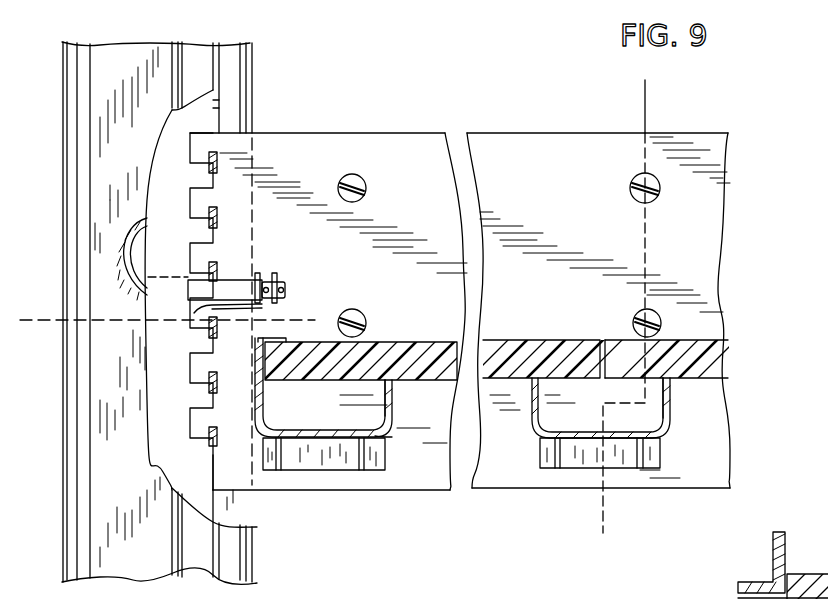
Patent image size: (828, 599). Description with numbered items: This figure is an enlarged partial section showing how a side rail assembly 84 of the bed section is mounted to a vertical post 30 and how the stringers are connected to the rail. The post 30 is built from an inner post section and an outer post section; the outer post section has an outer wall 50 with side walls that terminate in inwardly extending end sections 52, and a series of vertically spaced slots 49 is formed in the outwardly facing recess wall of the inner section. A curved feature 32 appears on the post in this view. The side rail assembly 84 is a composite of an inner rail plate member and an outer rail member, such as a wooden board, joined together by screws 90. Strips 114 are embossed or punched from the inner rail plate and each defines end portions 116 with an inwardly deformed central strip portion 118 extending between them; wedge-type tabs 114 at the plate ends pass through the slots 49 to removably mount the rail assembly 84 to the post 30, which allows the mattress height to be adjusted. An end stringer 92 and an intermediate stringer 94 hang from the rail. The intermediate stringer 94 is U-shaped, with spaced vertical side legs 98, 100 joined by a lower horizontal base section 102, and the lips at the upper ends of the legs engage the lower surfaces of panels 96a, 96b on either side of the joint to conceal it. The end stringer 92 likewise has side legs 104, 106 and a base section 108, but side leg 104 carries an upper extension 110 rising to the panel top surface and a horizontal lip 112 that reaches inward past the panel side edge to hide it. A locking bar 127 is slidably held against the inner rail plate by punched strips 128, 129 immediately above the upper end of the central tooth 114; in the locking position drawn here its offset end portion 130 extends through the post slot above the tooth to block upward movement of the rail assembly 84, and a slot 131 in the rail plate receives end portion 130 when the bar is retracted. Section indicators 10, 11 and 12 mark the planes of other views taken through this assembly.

The section line 10- 10 is at (30, 320).
The section line 11- 11 is at (603, 88).
The section line 12- 12 is at (162, 275).
The post 30 is at (61, 493).
The bulge 32 is at (118, 237).
The slot 49 is at (212, 470).
The outer wall 50 is at (218, 130).
The end section 52 is at (216, 117).
The side rail assembly 84 is at (714, 133).
The screw 90 is at (365, 182).
The end stringer 92 is at (389, 432).
The intermediate stringer 94 is at (667, 431).
The panel 96a is at (490, 340).
The panel 96b is at (709, 340).
The side leg 98 is at (533, 405).
The side leg 100 is at (667, 401).
The base section 102 is at (593, 434).
The side leg 104 is at (258, 394).
The side leg 106 is at (394, 405).
The base section 108 is at (327, 437).
The upper extension 110 is at (215, 352).
The lip 112 is at (280, 338).
The strip 114 is at (190, 241).
The end portion 116 is at (276, 470).
The central strip portion 118 is at (322, 459).
The locking bar 127 is at (229, 279).
The punched strip 128 is at (195, 312).
The punched strip 129 is at (272, 306).
The offset end portion 130 is at (738, 598).
The slot 131 is at (766, 592).